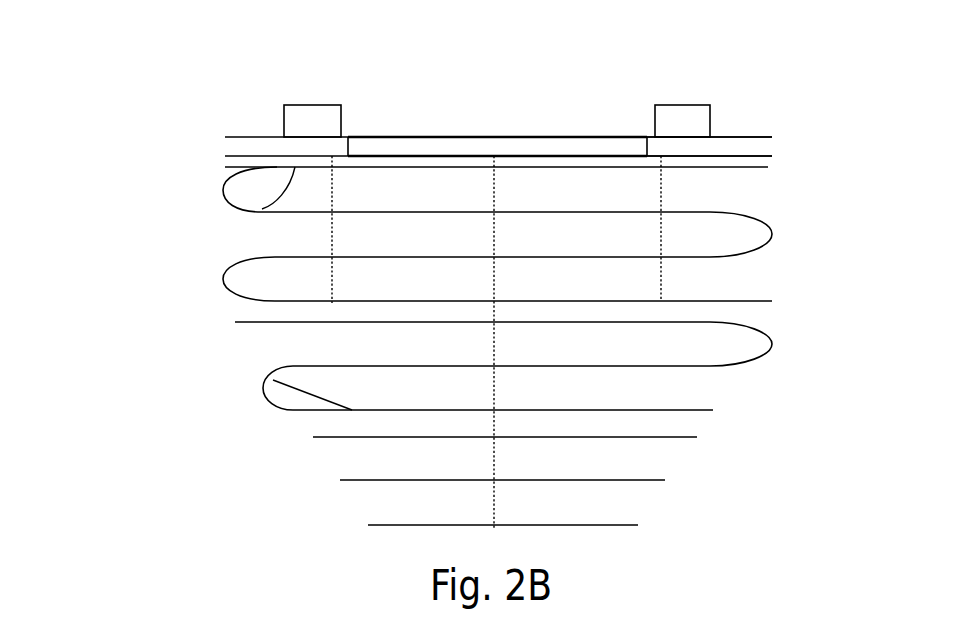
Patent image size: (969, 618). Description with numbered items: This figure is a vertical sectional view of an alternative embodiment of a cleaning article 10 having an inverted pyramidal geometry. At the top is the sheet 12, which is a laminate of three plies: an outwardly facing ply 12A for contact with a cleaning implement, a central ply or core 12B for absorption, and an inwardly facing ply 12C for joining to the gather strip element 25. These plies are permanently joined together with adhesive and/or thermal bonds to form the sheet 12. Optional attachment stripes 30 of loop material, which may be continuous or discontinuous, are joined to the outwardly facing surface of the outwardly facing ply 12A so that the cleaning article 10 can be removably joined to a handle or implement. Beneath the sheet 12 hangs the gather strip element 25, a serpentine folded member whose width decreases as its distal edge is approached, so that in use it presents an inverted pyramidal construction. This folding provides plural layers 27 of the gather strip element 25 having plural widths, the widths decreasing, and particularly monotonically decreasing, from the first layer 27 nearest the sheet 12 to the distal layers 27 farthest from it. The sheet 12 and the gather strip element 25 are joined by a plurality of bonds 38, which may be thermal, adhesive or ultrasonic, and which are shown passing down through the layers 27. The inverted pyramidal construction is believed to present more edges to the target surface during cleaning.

The cleaning article 10 is at (451, 268).
The sheet 12 is at (222, 137).
The outwardly facing ply 12A is at (718, 121).
The central ply/core 12B is at (655, 148).
The inwardly facing ply 12C is at (757, 170).
The gather strip element 25 is at (408, 343).
The layers 27 is at (226, 274).
The attachment stripes 30 is at (629, 91).
The bonds 38 is at (333, 190).